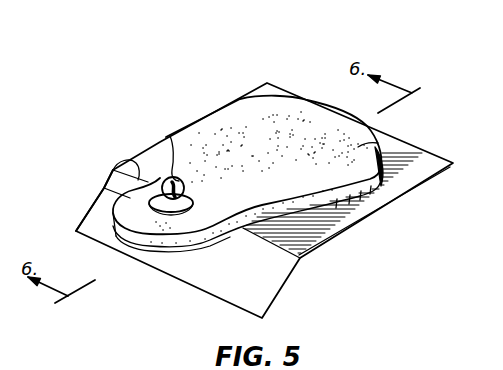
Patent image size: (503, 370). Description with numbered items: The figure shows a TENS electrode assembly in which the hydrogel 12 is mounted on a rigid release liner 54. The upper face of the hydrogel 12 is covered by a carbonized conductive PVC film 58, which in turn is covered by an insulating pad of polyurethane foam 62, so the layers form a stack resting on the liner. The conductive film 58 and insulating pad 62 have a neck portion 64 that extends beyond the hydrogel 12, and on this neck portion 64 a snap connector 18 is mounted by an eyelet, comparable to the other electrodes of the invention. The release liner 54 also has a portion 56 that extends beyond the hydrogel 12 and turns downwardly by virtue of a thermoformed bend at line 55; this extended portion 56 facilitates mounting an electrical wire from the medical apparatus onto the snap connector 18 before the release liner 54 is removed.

The hydrogel 12 is at (372, 195).
The snap connector 18 is at (183, 172).
The rigid release liner 54 is at (352, 227).
The thermoformed bend line 55 is at (133, 165).
The extended portion of release liner 56 is at (268, 288).
The carbonized conductive PVC film 58 is at (309, 213).
The insulating pad of polyurethane foam 62 is at (378, 143).
The neck portion 64 is at (104, 188).